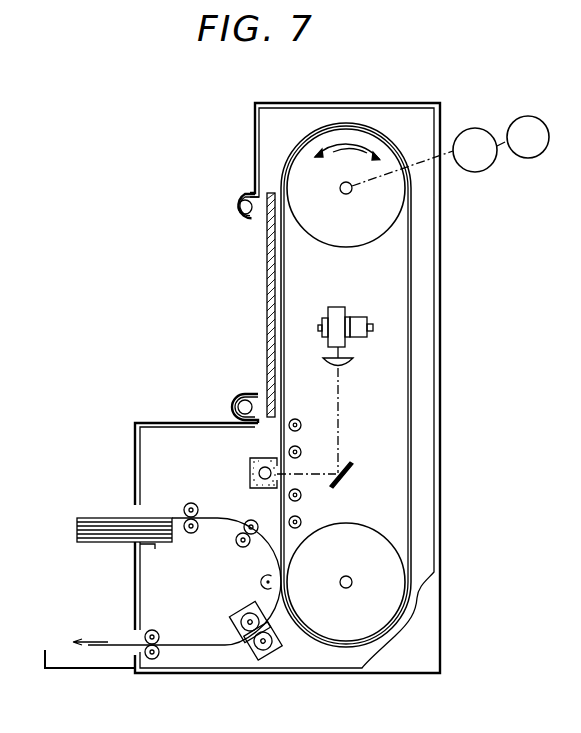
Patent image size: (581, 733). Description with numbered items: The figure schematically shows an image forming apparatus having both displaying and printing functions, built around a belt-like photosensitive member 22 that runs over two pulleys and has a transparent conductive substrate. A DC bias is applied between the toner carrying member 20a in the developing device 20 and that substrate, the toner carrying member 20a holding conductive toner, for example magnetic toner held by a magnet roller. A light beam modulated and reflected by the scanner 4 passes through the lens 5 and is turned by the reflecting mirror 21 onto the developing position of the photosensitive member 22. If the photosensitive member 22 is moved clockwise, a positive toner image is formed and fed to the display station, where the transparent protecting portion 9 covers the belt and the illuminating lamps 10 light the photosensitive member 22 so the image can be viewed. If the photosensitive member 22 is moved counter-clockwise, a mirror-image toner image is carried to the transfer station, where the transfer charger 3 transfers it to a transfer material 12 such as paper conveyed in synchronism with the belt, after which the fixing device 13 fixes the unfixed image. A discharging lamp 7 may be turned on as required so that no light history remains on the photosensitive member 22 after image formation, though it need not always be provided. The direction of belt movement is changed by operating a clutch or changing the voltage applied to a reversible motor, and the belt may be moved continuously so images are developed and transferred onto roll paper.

The transfer charger 3 is at (260, 582).
The scanner 4 is at (338, 307).
The lens 5 is at (351, 359).
The discharging lamp 7 is at (300, 420).
The transparent protecting portion 9 is at (267, 301).
The illuminating lamp 10 is at (233, 207).
The transfer material 12 is at (128, 517).
The fixing device 13 is at (277, 649).
The developing device 20 is at (250, 478).
The toner carrying member 20a is at (261, 467).
The reflecting mirror 21 is at (345, 480).
The belt-like photosensitive member 22 is at (286, 268).